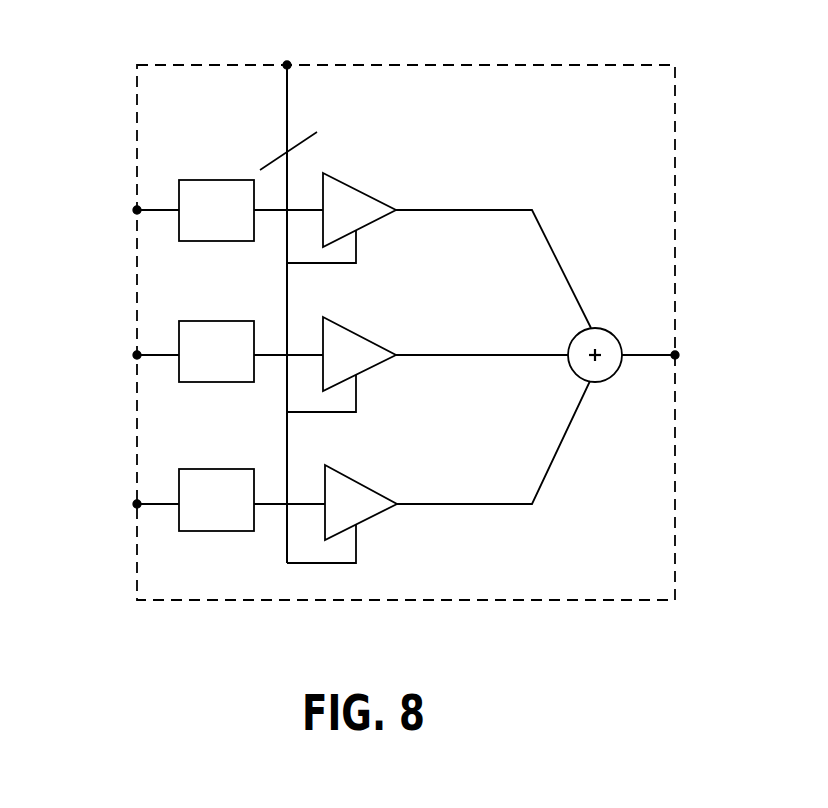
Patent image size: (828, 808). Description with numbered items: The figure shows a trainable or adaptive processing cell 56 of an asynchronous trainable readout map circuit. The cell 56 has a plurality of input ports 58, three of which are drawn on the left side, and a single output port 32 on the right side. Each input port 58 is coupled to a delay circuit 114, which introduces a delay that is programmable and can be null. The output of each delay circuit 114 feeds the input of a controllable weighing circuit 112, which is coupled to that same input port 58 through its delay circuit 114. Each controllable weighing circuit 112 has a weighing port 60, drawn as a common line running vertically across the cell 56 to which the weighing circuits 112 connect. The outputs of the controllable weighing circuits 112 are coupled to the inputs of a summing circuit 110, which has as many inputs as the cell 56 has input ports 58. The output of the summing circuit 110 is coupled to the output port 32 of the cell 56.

The trainable processing cell 56 is at (678, 149).
The weighing port 60 is at (287, 65).
The input port 58 is at (135, 210).
The delay circuit 114 is at (218, 180).
The controllable weighing circuit 112 is at (380, 190).
The summing circuit 110 is at (604, 381).
The output port 32 is at (678, 357).